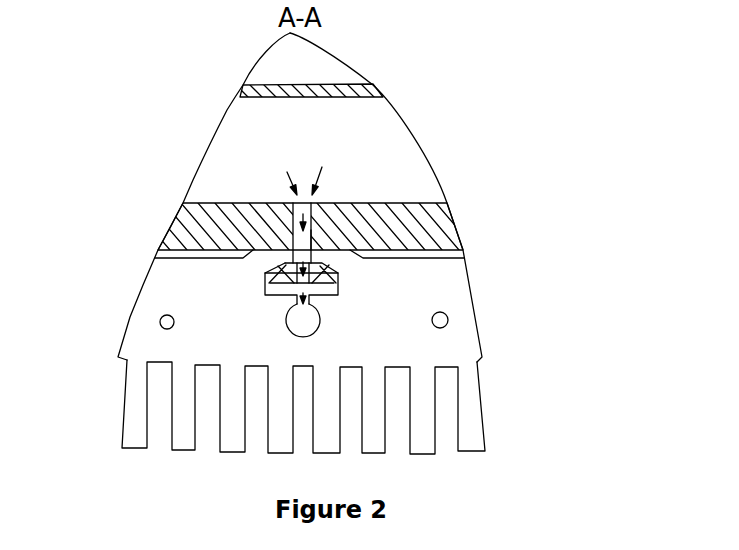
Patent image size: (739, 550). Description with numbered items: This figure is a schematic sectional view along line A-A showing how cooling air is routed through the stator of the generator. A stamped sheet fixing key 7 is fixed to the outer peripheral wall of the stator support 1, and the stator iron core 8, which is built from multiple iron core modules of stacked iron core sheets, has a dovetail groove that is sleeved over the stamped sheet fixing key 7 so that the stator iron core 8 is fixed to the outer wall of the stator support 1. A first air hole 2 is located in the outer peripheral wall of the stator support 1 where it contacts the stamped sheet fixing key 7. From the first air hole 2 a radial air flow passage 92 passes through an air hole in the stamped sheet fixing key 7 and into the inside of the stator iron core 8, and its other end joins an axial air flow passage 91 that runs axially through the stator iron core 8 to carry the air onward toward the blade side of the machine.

The stator support 1 is at (218, 171).
The first air hole 2 is at (320, 200).
The stamped sheet fixing key 7 is at (275, 268).
The stator iron core 8 is at (167, 349).
The axial passage 91 is at (327, 321).
The radial passage 92 is at (312, 239).